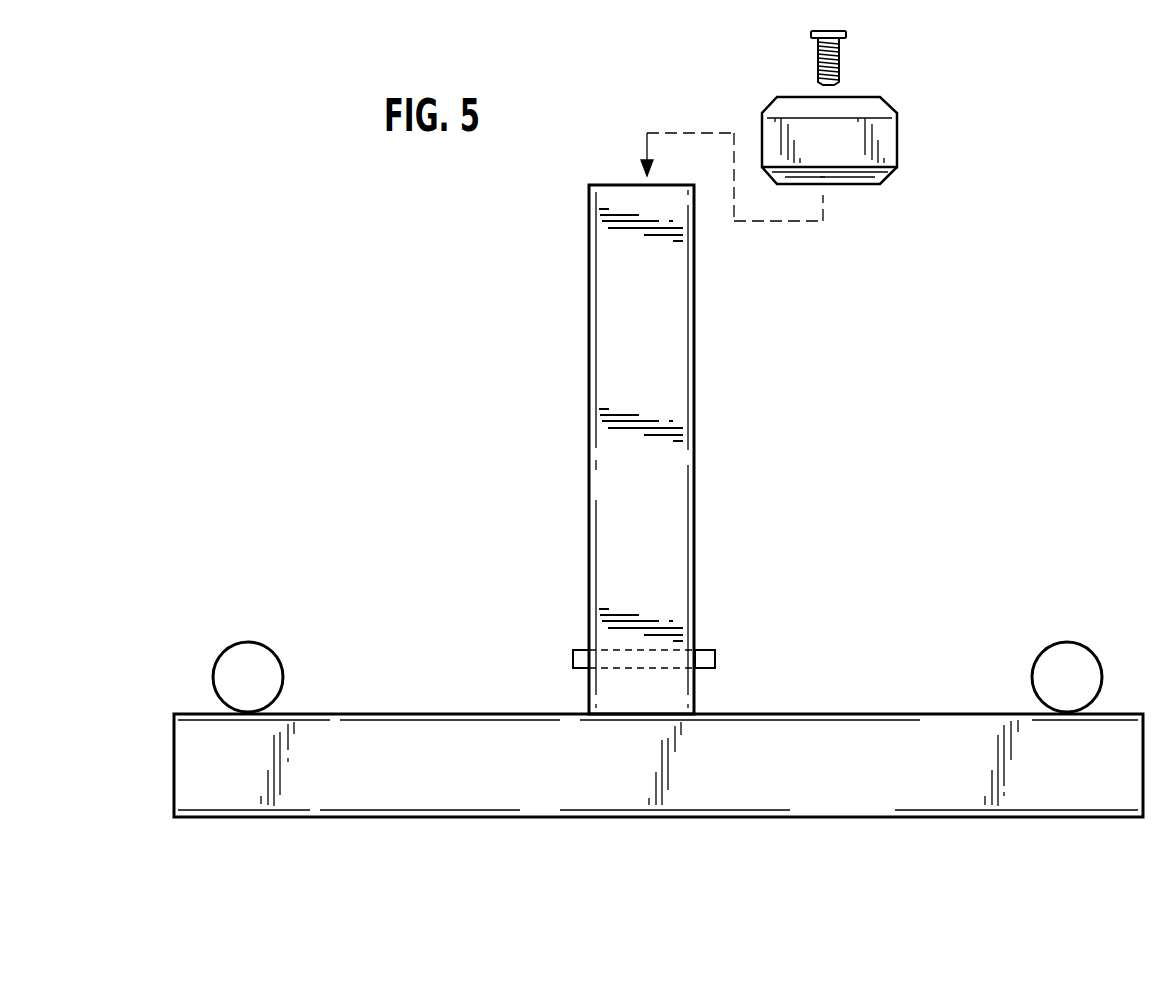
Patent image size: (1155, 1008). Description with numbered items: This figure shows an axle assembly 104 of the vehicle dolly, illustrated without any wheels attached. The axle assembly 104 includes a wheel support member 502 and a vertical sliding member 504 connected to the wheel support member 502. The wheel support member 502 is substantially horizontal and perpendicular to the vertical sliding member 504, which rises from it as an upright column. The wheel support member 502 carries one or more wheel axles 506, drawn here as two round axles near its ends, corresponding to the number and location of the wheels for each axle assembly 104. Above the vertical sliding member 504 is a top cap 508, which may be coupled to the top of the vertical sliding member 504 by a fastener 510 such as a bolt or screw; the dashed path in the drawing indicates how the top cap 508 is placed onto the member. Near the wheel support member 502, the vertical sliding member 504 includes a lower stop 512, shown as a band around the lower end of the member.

The axle assembly 104 is at (826, 828).
The wheel support member 502 is at (332, 780).
The vertical sliding member 504 is at (673, 452).
The wheel axles 506 is at (284, 677).
The top cap 508 is at (890, 145).
The fastener 510 is at (846, 35).
The lower stop 512 is at (715, 658).